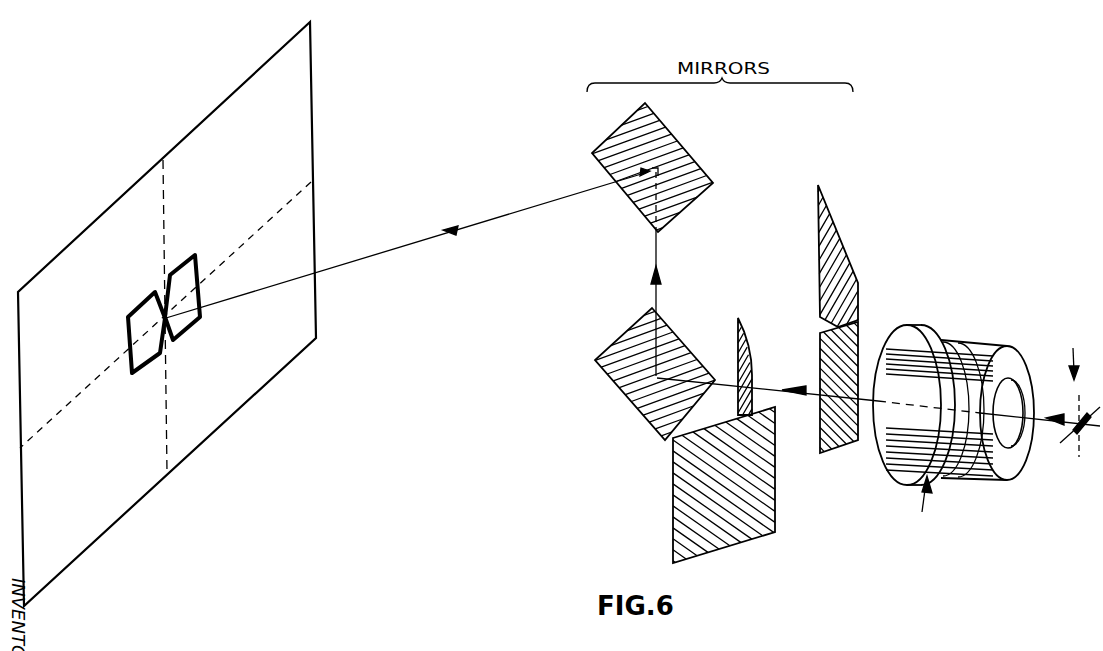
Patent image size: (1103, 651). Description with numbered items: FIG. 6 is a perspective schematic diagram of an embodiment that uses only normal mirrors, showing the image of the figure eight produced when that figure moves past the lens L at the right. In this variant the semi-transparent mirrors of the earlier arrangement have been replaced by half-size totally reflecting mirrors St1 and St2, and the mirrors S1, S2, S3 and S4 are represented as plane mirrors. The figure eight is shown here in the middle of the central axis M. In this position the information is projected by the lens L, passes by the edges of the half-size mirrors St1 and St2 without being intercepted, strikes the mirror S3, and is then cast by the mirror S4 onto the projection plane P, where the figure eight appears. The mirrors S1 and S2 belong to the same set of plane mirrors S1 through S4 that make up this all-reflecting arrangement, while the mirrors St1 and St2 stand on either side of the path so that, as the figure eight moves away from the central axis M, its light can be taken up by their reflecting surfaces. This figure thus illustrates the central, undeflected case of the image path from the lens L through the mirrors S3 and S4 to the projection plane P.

The projection plane P is at (297, 82).
The central axis M is at (1080, 417).
The plane mirror S1 is at (680, 523).
The plane mirror S2 is at (825, 262).
The plane mirror S3 is at (681, 337).
The plane mirror S4 is at (638, 203).
The half-size totally reflecting mirror St1 is at (853, 447).
The half-size totally reflecting mirror St2 is at (740, 342).
The projecting lens L is at (980, 346).